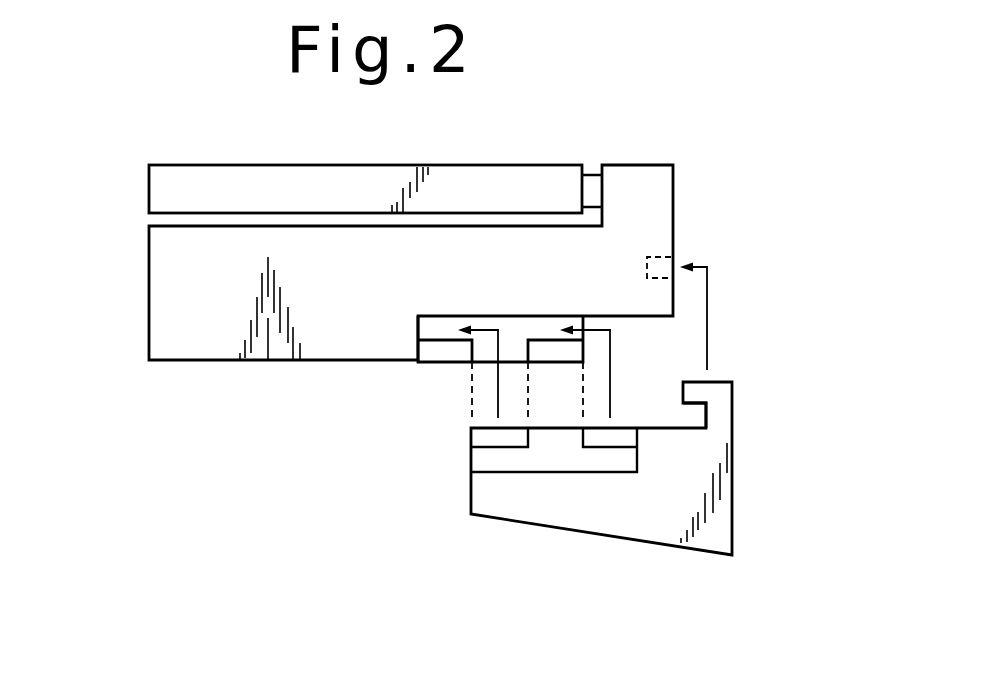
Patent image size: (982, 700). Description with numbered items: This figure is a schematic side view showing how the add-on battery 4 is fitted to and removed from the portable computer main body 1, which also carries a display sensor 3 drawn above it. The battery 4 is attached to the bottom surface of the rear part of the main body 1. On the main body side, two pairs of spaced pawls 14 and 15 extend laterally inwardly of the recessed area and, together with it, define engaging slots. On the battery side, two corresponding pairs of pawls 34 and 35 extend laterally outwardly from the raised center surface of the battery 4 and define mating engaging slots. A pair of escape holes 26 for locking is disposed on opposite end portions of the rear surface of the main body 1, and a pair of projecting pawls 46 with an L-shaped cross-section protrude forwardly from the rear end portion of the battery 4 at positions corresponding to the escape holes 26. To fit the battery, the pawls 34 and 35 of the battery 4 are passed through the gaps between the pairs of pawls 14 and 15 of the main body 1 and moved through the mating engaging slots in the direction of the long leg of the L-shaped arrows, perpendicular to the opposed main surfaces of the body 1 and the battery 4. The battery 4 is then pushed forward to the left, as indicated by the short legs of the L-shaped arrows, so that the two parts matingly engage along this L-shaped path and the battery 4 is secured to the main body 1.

The portable computer main body 1 is at (178, 286).
The display sensor 3 is at (172, 192).
The add-on battery 4 is at (648, 545).
The pawls 14 is at (550, 355).
The pawls 15 is at (437, 353).
The escape holes for locking 26 is at (660, 268).
The pawls 34 is at (600, 437).
The pawls 35 is at (487, 438).
The projecting pawls 46 is at (695, 393).